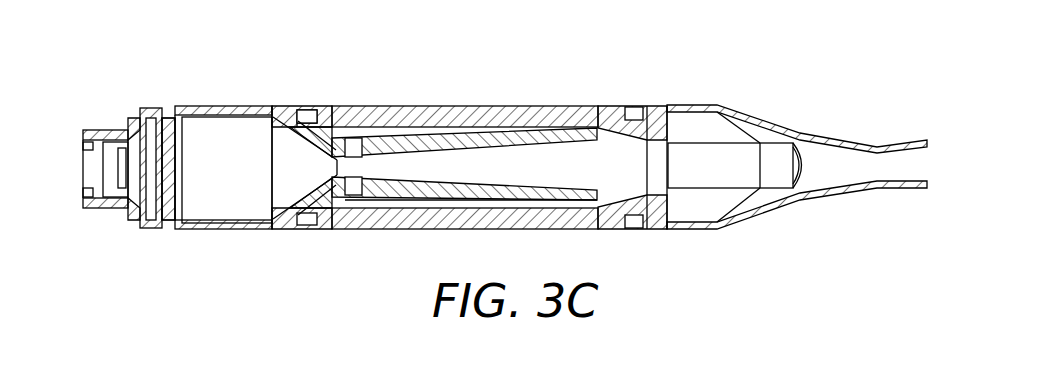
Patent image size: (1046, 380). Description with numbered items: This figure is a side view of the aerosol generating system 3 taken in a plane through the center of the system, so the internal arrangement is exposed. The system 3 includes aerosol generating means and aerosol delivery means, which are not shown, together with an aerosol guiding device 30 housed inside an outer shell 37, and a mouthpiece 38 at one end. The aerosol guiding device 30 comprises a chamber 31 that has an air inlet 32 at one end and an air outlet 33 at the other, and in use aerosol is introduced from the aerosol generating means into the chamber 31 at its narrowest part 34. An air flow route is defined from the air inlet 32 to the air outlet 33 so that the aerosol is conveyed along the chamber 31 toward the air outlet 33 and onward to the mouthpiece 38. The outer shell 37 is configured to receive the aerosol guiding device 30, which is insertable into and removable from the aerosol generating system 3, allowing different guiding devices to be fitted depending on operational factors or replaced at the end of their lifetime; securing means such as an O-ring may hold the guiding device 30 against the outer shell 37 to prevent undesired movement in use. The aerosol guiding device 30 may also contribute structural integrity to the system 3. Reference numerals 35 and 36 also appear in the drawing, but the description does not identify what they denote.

The aerosol generating system 3 is at (703, 62).
The aerosol guiding device 30 is at (406, 200).
The chamber 31 is at (449, 196).
The air inlet 32 is at (280, 193).
The air outlet 33 is at (660, 180).
The narrowest part 34 is at (358, 168).
The cone chamber 35 is at (291, 152).
The inner sleeve 36 is at (548, 157).
The outer shell 37 is at (448, 104).
The mouthpiece 38 is at (882, 142).